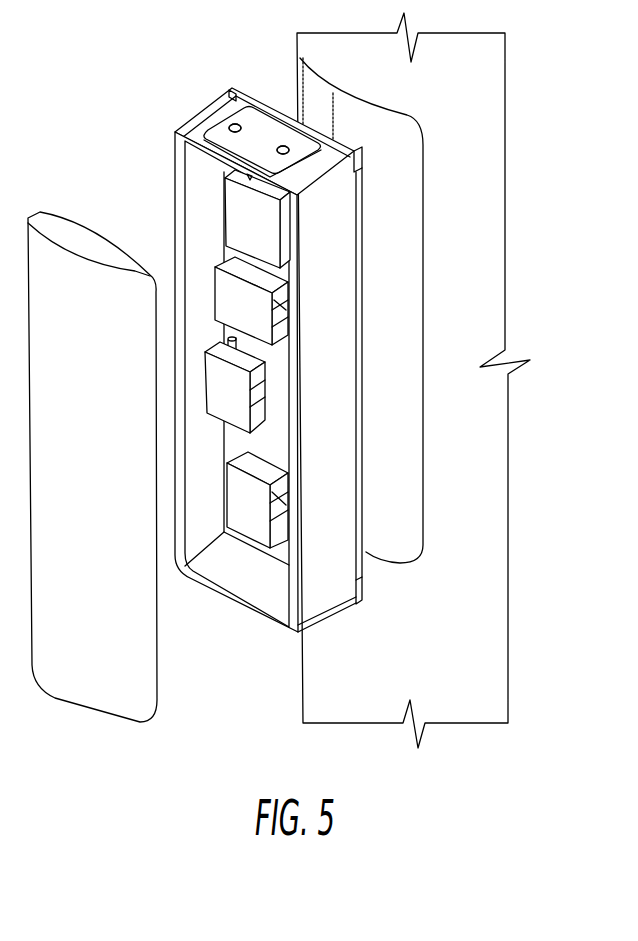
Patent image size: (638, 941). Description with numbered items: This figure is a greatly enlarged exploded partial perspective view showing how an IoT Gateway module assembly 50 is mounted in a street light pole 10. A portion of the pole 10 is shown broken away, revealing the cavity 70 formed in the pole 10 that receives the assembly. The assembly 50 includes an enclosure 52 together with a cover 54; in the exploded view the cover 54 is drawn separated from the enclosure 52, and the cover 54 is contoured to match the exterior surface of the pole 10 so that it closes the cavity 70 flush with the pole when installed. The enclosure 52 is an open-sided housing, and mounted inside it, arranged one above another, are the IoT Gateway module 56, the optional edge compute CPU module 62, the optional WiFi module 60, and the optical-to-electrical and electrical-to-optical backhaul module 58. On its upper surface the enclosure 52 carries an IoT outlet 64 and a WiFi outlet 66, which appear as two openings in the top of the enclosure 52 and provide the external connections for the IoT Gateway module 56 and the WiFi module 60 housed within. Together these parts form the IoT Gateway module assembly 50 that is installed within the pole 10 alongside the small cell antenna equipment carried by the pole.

The street light pole 10 is at (488, 615).
The IoT Gateway module assembly 50 is at (189, 741).
The enclosure 52 is at (268, 630).
The cover 54 is at (100, 687).
The IoT Gateway module 56 is at (278, 224).
The O/E backhaul module 58 is at (288, 474).
The WiFi module 60 is at (264, 400).
The edge compute CPU module 62 is at (267, 284).
The IoT outlet 64 is at (235, 125).
The WiFi outlet 66 is at (283, 147).
The cavity 70 is at (390, 147).